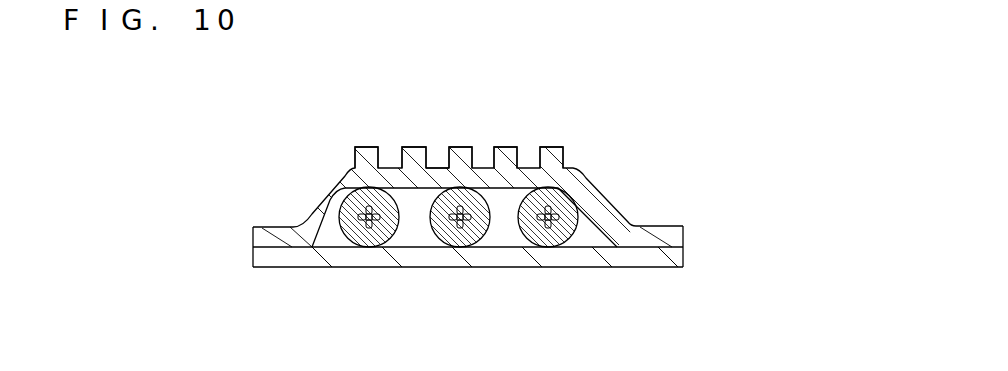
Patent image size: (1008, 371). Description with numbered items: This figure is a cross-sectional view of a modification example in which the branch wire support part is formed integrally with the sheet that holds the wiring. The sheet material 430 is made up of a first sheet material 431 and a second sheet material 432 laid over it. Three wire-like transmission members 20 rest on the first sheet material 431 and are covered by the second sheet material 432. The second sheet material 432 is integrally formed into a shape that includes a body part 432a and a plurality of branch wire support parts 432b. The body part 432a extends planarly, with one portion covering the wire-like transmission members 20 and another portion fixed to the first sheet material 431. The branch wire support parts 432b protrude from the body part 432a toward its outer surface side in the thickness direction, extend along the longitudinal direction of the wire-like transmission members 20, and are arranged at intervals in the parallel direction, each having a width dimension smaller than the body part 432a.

The wire-like transmission member 20 is at (430, 231).
The sheet material 430 is at (747, 220).
The first sheet material 431 is at (683, 254).
The second sheet material 432 is at (683, 234).
The body part 432a is at (440, 172).
The branch wire support part 432b is at (405, 146).